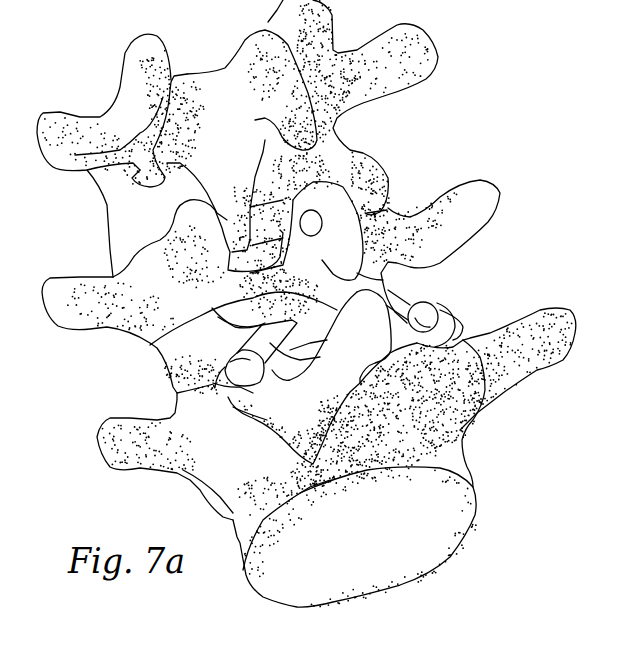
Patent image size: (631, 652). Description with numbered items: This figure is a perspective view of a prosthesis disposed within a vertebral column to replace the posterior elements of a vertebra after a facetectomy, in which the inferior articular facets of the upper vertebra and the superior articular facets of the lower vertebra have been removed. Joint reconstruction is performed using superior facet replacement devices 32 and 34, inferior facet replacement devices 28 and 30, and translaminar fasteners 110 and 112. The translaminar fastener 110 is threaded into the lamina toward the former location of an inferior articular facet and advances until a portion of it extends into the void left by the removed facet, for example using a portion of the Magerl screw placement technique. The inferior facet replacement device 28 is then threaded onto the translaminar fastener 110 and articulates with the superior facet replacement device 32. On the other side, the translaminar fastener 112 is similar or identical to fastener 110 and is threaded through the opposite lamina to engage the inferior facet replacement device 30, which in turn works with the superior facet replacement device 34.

The translaminar fastener 110 is at (218, 317).
The translaminar fastener 112 is at (397, 303).
The inferior facet replacement device 28 is at (279, 382).
The inferior facet replacement device 30 is at (423, 302).
The superior facet replacement device 32 is at (217, 380).
The superior facet replacement device 34 is at (460, 322).